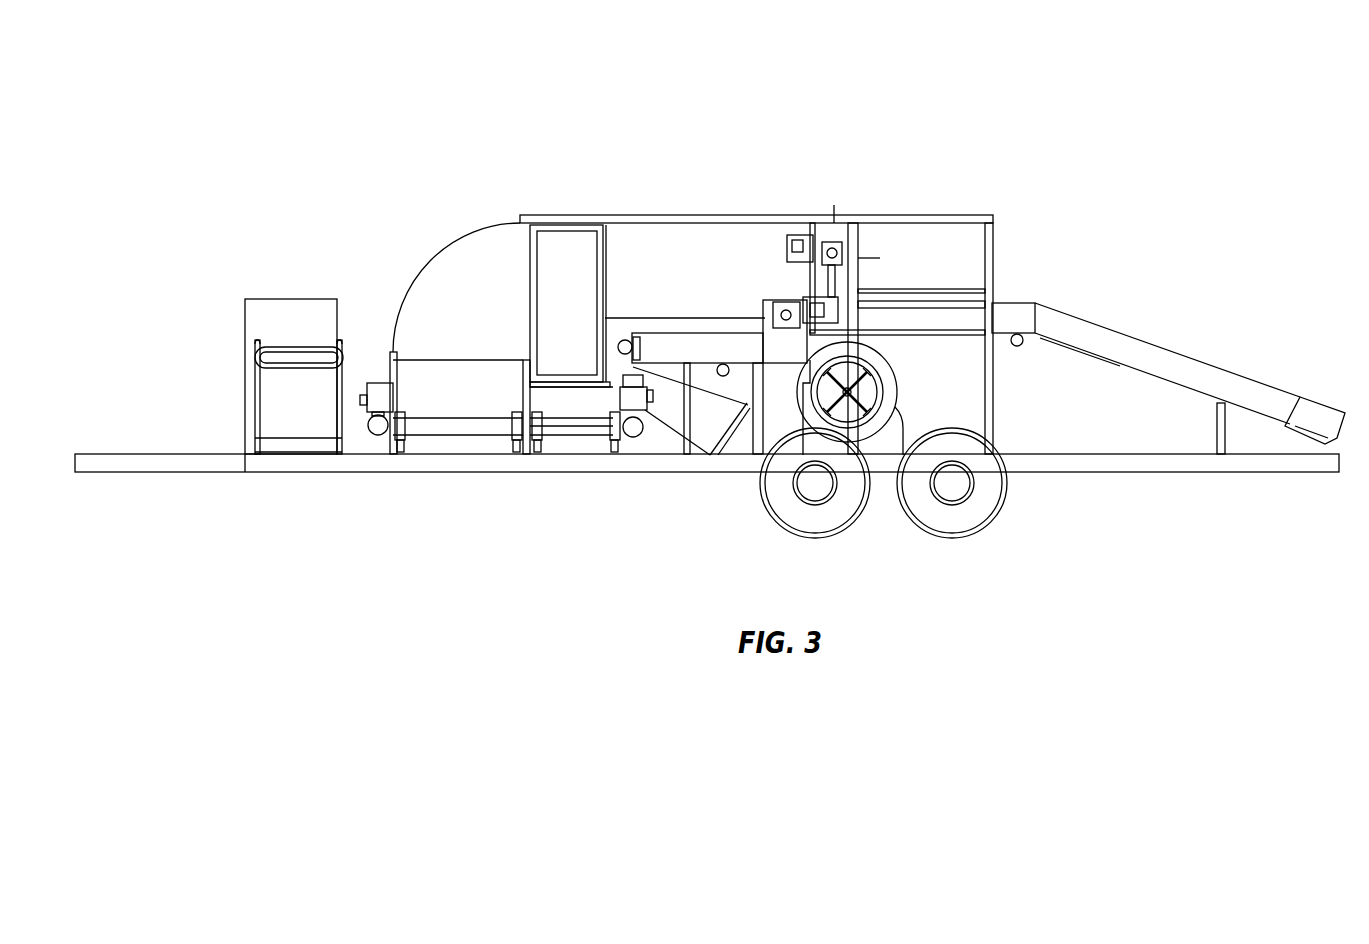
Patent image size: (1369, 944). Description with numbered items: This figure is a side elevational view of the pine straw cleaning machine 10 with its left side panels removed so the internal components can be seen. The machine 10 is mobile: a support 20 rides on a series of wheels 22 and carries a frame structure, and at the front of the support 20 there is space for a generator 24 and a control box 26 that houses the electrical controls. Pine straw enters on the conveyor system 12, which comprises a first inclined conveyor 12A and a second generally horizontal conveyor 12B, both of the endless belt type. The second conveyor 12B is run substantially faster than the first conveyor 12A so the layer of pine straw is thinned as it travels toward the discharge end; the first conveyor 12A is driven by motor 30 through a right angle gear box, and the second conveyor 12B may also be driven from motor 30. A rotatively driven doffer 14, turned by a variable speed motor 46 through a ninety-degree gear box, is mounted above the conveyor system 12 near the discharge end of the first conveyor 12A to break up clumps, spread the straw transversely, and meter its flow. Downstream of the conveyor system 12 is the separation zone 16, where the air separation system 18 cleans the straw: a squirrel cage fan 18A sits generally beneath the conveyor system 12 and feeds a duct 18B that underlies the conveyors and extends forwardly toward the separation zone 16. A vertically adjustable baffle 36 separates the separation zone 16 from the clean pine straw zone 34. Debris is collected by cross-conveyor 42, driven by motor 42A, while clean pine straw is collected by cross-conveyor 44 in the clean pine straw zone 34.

The pine straw cleaning machine 10 is at (478, 122).
The conveyor system 12 is at (1168, 338).
The first inclined conveyor 12A is at (1200, 362).
The second generally horizontal conveyor 12B is at (713, 332).
The doffer 14 is at (878, 237).
The separation zone 16 is at (555, 403).
The air separation system 18 is at (875, 388).
The fan 18A is at (895, 385).
The duct 18B is at (698, 417).
The support 20 is at (1097, 460).
The wheels 22 is at (817, 520).
The generator 24 is at (290, 407).
The control box 26 is at (293, 313).
The motor 30 is at (805, 303).
The clean pine straw zone 34 is at (450, 403).
The baffle 36 is at (525, 393).
The cross-conveyor 42 is at (582, 427).
The motor 42A is at (635, 398).
The cross-conveyor 44 is at (428, 425).
The variable speed motor 46 is at (803, 243).